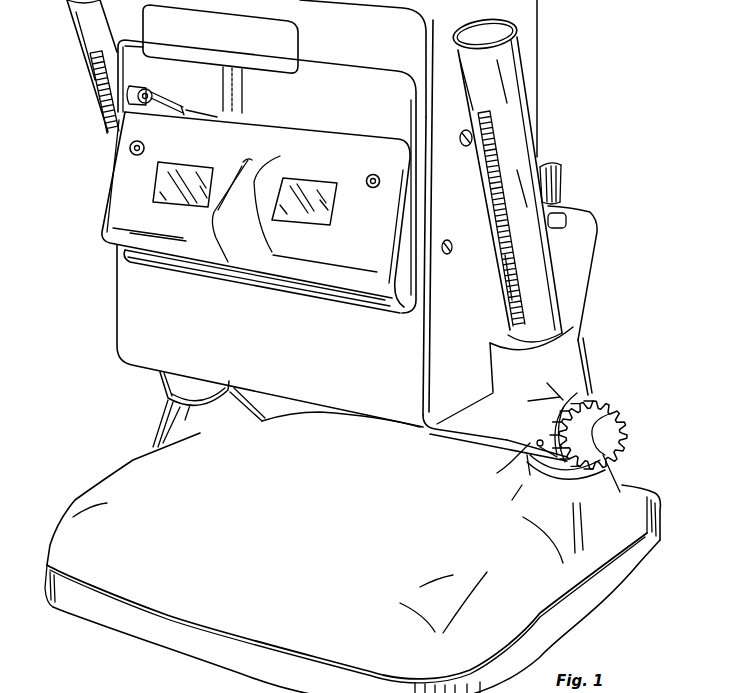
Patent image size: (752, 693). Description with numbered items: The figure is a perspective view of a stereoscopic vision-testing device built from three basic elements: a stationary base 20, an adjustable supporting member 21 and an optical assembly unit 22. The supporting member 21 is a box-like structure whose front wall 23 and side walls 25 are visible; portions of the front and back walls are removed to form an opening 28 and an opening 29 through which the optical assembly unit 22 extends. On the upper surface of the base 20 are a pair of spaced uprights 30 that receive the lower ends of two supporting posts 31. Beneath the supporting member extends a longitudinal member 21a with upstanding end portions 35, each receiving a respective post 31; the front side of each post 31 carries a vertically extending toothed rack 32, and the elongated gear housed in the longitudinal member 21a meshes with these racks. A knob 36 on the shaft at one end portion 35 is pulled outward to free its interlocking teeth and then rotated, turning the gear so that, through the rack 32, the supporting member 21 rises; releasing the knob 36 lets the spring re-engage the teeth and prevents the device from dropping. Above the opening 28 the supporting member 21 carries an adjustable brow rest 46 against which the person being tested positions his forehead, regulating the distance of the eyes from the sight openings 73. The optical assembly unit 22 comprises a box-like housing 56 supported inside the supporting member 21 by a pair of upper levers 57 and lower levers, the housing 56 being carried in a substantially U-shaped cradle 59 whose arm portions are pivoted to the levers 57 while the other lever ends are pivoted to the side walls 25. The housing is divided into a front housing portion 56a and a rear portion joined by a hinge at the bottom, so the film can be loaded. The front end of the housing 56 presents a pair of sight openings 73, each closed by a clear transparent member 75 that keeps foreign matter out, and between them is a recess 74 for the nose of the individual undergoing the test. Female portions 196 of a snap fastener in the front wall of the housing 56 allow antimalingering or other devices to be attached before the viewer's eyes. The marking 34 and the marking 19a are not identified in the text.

The stationary base 20 is at (121, 496).
The adjustable supporting member 21 is at (135, 326).
The longitudinal member 21a is at (440, 432).
The optical assembly unit 22 is at (120, 199).
The front wall 23 is at (125, 298).
The side walls 25 is at (240, 82).
The opening 28 is at (115, 79).
The opening 29 is at (244, 106).
The uprights 30 is at (160, 424).
The supporting posts 31 is at (80, 23).
The toothed rack 32 is at (108, 102).
The rail 34 is at (507, 444).
The end portions 35 is at (575, 366).
The knob 36 is at (612, 415).
The brow rest 46 is at (277, 44).
The housing 56 is at (366, 143).
The front housing portion 56a is at (103, 220).
The upper levers 57 is at (154, 96).
The cradle 59 is at (185, 109).
The sight openings 73 is at (196, 166).
The recess 74 is at (252, 170).
The transparent members 75 is at (168, 188).
The female portions of snap fastener 196 is at (146, 145).
The latch 19a is at (537, 463).